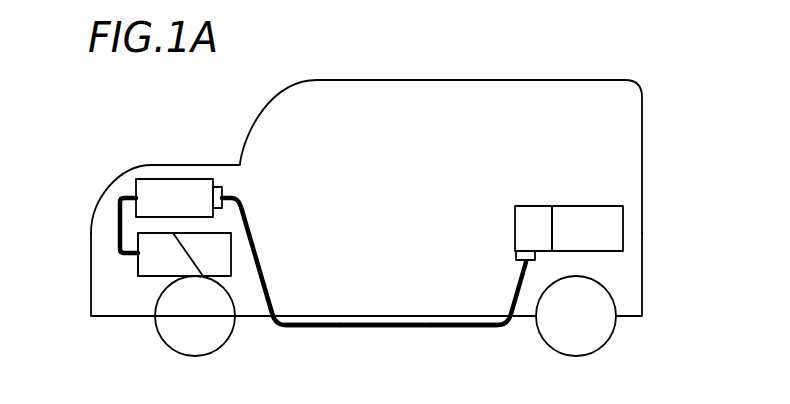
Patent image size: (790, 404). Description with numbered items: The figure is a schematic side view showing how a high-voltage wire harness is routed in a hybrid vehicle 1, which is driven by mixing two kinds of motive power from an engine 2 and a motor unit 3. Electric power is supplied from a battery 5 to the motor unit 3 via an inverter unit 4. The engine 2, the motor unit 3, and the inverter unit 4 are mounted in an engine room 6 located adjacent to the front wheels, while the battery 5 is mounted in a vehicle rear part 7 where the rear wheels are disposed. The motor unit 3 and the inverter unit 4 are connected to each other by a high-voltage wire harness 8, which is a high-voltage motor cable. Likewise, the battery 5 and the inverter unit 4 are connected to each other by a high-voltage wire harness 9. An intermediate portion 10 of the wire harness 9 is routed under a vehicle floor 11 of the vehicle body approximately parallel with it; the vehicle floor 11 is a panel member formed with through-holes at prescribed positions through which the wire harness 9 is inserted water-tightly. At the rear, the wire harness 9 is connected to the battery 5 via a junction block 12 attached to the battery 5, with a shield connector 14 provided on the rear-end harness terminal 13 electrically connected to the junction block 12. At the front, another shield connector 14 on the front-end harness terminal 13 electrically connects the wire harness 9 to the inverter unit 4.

The hybrid vehicle 1 is at (412, 75).
The engine 2 is at (222, 262).
The motor unit 3 is at (157, 265).
The inverter unit 4 is at (163, 192).
The battery 5 is at (593, 220).
The engine room 6 is at (105, 293).
The vehicle rear part 7 is at (626, 283).
The high-voltage wire harness 8 is at (118, 232).
The high-voltage wire harness 9 is at (305, 328).
The intermediate portion 10 is at (402, 328).
The vehicle floor 11 is at (457, 319).
The junction block 12 is at (534, 220).
The harness terminal 13 is at (242, 199).
The shield connector 14 is at (220, 185).